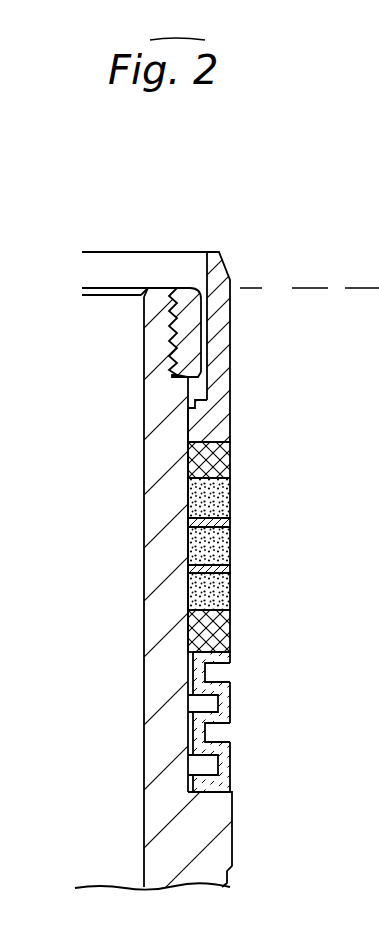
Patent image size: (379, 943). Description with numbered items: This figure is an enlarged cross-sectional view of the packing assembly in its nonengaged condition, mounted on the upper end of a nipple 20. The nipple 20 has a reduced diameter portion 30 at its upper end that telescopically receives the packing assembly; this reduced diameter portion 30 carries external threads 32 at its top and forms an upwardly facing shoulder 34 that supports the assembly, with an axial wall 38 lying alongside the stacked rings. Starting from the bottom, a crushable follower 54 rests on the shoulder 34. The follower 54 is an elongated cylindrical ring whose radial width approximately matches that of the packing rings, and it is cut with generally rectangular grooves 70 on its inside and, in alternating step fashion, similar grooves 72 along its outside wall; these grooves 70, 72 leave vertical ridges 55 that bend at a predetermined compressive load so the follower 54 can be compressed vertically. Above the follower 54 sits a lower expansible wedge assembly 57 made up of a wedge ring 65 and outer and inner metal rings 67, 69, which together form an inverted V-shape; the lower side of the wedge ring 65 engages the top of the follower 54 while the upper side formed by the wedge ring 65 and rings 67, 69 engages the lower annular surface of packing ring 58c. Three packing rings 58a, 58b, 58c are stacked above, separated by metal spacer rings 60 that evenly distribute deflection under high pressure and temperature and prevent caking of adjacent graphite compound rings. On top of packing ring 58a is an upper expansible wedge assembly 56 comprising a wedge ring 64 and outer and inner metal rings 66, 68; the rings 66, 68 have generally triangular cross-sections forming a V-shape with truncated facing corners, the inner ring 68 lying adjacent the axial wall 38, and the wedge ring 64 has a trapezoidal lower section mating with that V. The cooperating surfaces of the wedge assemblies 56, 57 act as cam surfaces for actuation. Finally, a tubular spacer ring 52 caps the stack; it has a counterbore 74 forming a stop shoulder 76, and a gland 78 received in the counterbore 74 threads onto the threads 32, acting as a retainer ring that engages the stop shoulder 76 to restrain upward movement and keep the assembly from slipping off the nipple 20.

The nipple 20 is at (162, 857).
The reduced diameter portion 30 is at (158, 390).
The external threads 32 is at (168, 331).
The upwardly facing shoulder 34 is at (210, 790).
The axial wall 38 is at (190, 545).
The tubular spacer ring 52 is at (222, 337).
The crushable follower 54 is at (188, 745).
The vertical ridges 55 is at (220, 698).
The upper expansible wedge assembly 56 is at (230, 449).
The lower expansible wedge assembly 57 is at (195, 642).
The packing ring 58a is at (215, 497).
The packing ring 58b is at (215, 543).
The packing ring 58c is at (215, 591).
The spacer rings 60 is at (230, 519).
The wedge ring 64 is at (230, 446).
The wedge ring 65 is at (215, 643).
The outer metal ring 66 is at (230, 473).
The outer metal ring 67 is at (210, 625).
The inner metal ring 68 is at (188, 473).
The inner metal ring 69 is at (195, 622).
The grooves 70 is at (188, 705).
The grooves 72 is at (207, 735).
The counterbore 74 is at (204, 391).
The stop shoulder 76 is at (199, 403).
The gland 78 is at (188, 308).